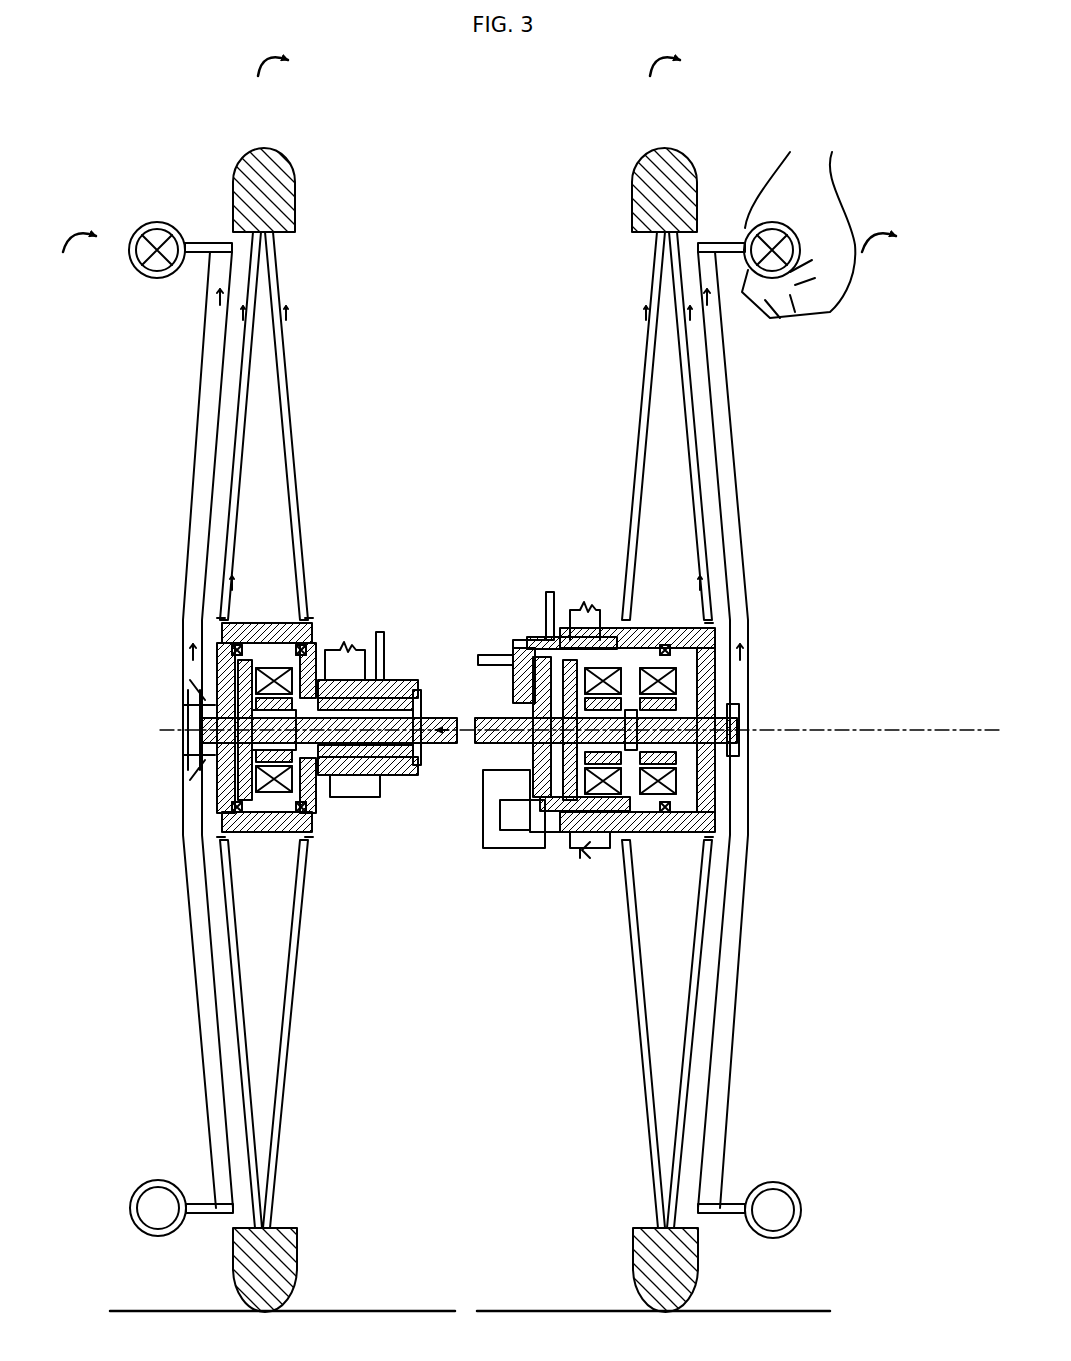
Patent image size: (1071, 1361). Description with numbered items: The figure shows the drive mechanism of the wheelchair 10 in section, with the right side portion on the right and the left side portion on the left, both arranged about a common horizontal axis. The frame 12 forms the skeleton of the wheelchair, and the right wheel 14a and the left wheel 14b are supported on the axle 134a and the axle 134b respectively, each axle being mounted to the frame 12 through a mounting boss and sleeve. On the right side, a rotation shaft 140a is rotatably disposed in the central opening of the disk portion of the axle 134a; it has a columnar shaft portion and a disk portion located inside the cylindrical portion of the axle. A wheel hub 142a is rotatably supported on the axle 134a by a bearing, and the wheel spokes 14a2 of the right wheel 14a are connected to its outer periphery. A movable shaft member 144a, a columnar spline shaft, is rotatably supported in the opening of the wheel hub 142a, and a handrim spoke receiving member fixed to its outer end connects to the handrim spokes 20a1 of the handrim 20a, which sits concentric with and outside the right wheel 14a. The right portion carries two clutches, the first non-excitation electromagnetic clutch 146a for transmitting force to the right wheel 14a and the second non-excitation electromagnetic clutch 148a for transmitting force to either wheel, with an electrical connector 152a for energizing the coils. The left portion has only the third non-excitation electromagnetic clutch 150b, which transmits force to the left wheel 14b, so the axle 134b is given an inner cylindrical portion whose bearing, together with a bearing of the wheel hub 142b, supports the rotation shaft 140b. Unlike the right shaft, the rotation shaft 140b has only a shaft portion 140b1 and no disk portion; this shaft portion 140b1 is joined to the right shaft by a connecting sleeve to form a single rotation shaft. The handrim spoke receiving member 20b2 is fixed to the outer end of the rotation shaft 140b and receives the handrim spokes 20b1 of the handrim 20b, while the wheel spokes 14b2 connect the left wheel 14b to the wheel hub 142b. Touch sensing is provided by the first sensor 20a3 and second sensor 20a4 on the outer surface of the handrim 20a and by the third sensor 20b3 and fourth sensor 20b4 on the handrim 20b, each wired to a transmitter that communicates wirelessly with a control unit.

The wheelchair 10 is at (450, 215).
The frame 12 is at (348, 640).
The right wheel 14a is at (642, 160).
The wheel spoke 14a2 is at (640, 372).
The left wheel 14b is at (286, 160).
The wheel spoke 14b2 is at (300, 378).
The handrim 20a is at (780, 300).
The handrim spoke 20a1 is at (745, 486).
The first sensor 20a3 is at (800, 240).
The second sensor 20a4 is at (736, 236).
The handrim 20b is at (138, 286).
The handrim spoke 20b1 is at (188, 476).
The handrim spoke receiving member 20b2 is at (190, 714).
The third sensor 20b3 is at (135, 235).
The fourth sensor 20b4 is at (183, 232).
The axle 134a is at (546, 826).
The axle 134b is at (340, 815).
The rotation shaft 140a is at (508, 714).
The rotation shaft 140b is at (425, 772).
The shaft portion 140b1 is at (450, 715).
The wheel hub 142a is at (700, 842).
The wheel hub 142b is at (245, 832).
The movable shaft member 144a is at (746, 740).
The first non-excitation electromagnetic clutch 146a is at (656, 834).
The second non-excitation electromagnetic clutch 148a is at (590, 848).
The third non-excitation electromagnetic clutch 150b is at (262, 834).
The electrical connector 152a is at (488, 842).